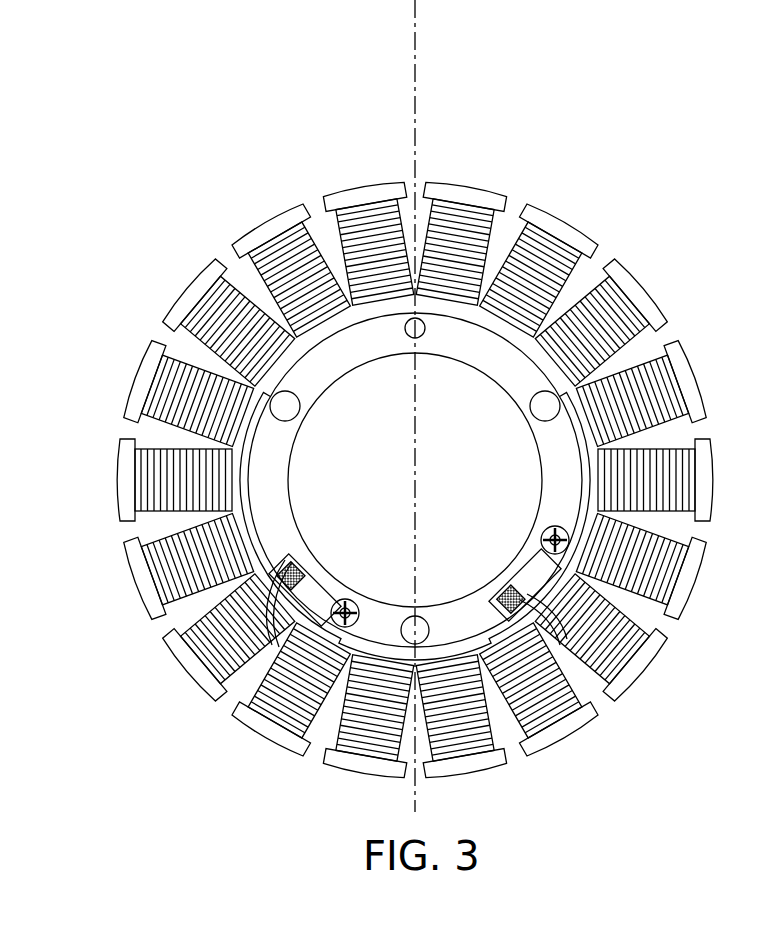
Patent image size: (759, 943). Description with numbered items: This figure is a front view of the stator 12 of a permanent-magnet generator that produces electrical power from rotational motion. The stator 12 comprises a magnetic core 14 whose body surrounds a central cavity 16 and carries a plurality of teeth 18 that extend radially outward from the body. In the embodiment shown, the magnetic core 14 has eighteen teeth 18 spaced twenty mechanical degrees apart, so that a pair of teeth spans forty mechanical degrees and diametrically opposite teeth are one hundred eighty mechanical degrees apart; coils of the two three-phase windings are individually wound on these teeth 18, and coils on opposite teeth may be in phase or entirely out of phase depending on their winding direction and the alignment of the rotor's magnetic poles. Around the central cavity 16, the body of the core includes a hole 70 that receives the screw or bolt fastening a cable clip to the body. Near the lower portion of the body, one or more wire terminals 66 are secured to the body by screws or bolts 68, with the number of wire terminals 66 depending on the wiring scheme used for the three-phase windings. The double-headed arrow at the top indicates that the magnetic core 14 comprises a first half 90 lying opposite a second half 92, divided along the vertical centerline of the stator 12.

The stator 12 is at (207, 206).
The magnetic core 14 is at (500, 352).
The central cavity 16 is at (478, 406).
The teeth 18 is at (357, 187).
The wire terminals 66 is at (280, 555).
The screws or bolts 68 is at (298, 650).
The hole 70 is at (283, 405).
The first half 90 is at (415, 45).
The second half 92 is at (415, 45).